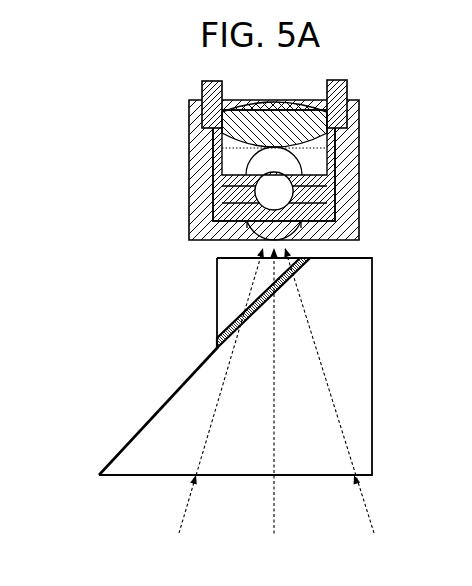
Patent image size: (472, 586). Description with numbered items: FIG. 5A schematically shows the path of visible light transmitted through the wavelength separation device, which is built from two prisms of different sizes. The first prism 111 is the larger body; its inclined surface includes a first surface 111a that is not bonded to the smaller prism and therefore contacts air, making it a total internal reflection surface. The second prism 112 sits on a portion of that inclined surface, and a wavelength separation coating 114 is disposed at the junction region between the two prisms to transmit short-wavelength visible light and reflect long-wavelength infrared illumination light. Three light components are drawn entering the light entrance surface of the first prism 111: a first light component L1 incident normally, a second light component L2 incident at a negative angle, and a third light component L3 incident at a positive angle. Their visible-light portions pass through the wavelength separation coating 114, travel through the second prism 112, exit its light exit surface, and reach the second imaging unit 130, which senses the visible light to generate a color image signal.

The second imaging unit 130 is at (191, 186).
The first prism 111 is at (362, 408).
The first surface 111a is at (137, 428).
The second prism 112 is at (217, 297).
The wavelength separation coating 114 is at (218, 349).
The first light component L1 is at (274, 404).
The second light component L2 is at (213, 404).
The third light component L3 is at (336, 404).